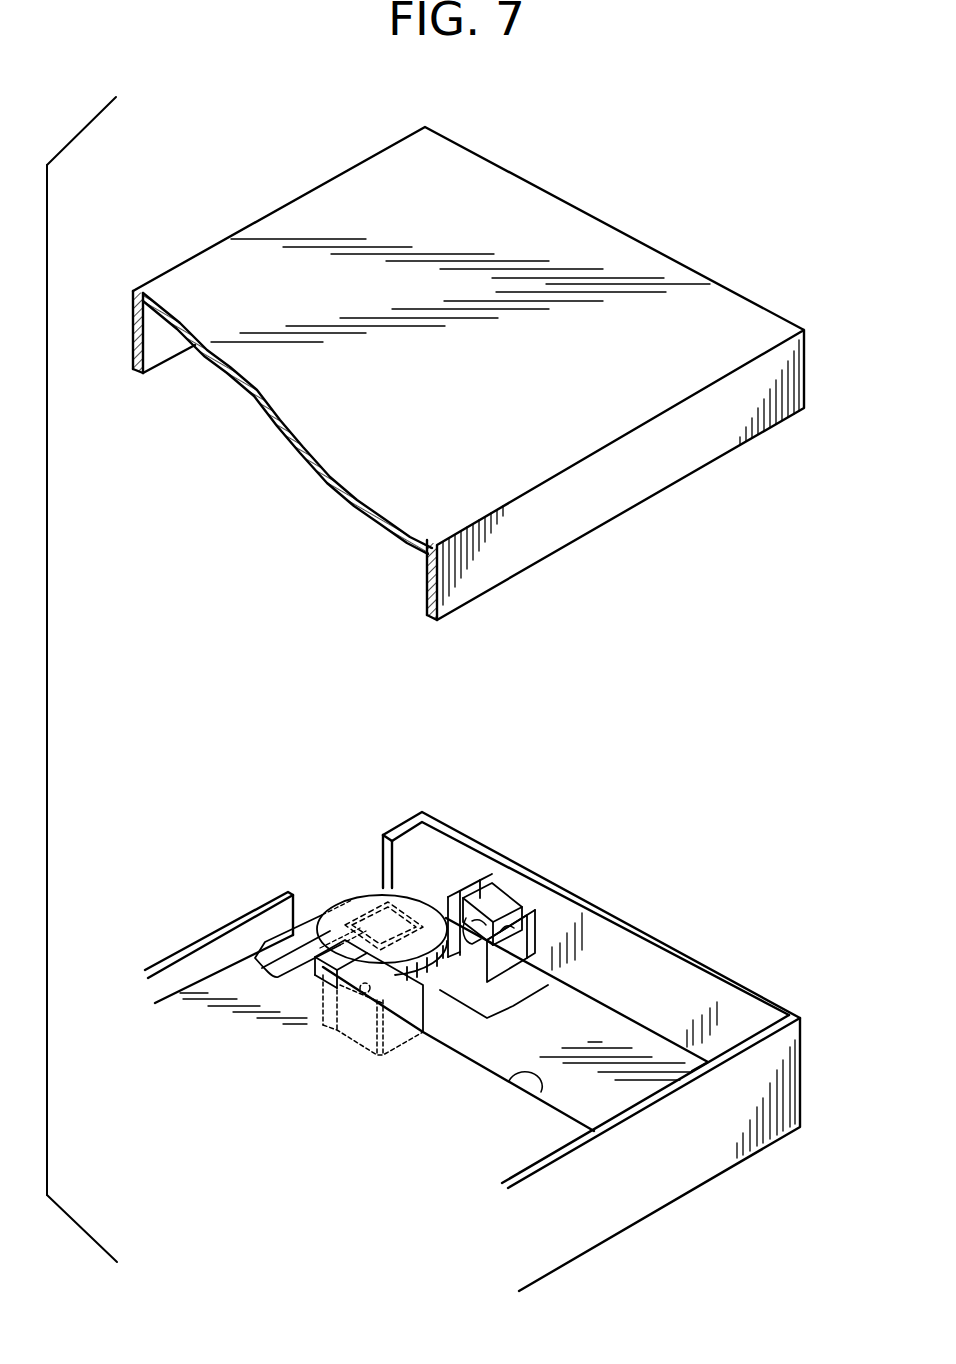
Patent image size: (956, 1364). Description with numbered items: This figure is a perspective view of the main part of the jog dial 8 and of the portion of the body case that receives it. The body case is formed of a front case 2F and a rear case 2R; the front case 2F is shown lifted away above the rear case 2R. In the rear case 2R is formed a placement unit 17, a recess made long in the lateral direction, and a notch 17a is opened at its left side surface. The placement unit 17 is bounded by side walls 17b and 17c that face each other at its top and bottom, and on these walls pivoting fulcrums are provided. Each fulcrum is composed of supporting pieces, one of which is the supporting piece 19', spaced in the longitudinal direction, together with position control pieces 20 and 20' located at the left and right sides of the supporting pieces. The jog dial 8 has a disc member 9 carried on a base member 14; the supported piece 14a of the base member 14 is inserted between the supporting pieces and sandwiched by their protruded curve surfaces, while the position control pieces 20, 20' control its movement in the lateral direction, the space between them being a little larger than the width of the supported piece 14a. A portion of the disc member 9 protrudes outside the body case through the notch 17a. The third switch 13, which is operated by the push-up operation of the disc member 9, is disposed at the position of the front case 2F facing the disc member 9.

The front case 2F is at (601, 253).
The rear case 2R is at (481, 1029).
The jog dial 8 is at (428, 885).
The disc member 9 is at (348, 896).
The third switch 13 is at (405, 890).
The base member 14 is at (452, 993).
The supported piece 14a is at (504, 911).
The placement unit 17 is at (618, 1088).
The notch 17a is at (383, 853).
The side wall 17b is at (663, 985).
The side wall 17c is at (541, 1097).
The supporting piece 19' is at (437, 994).
The position control piece 20 is at (351, 944).
The position control piece 20' is at (510, 1026).